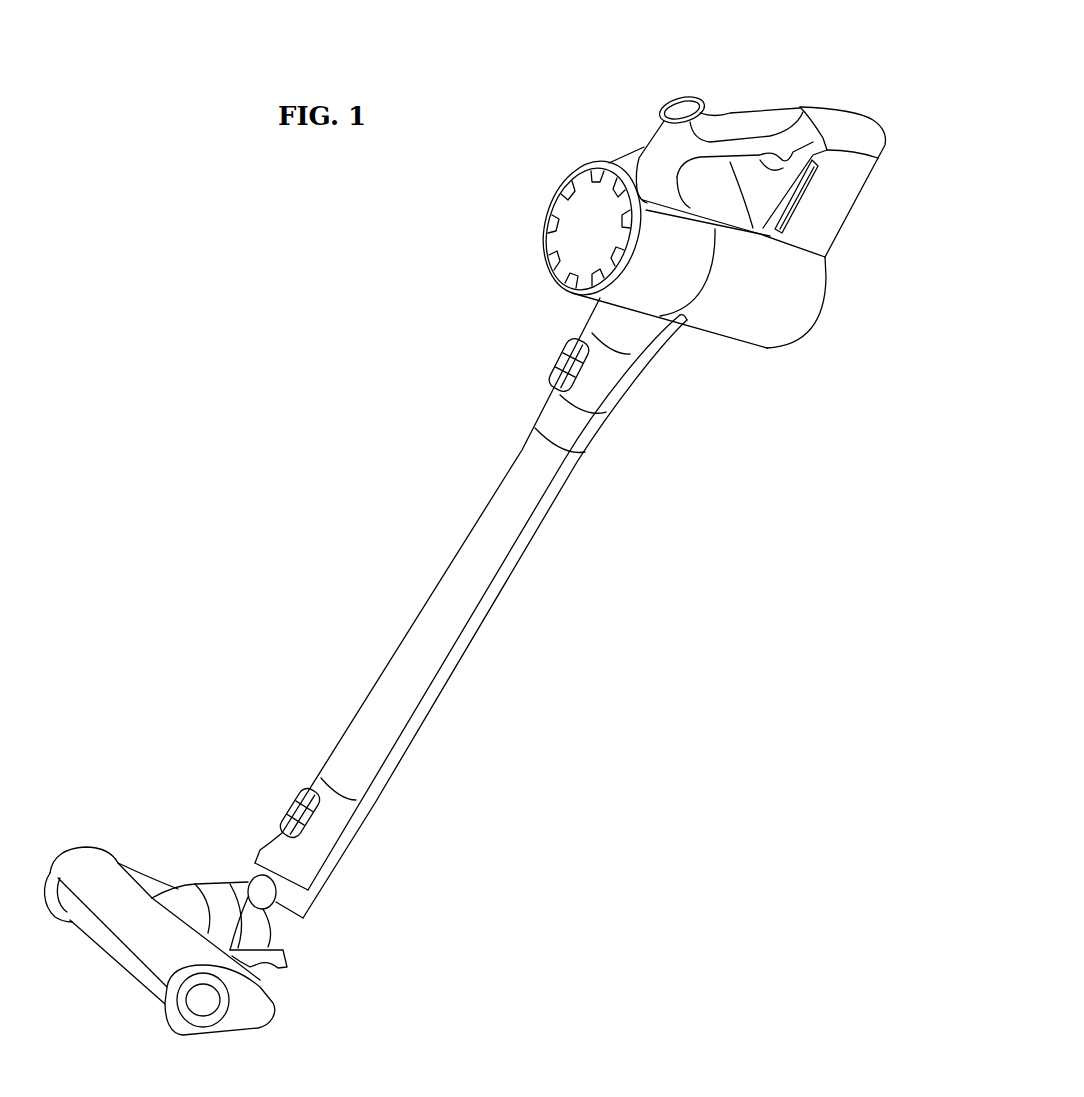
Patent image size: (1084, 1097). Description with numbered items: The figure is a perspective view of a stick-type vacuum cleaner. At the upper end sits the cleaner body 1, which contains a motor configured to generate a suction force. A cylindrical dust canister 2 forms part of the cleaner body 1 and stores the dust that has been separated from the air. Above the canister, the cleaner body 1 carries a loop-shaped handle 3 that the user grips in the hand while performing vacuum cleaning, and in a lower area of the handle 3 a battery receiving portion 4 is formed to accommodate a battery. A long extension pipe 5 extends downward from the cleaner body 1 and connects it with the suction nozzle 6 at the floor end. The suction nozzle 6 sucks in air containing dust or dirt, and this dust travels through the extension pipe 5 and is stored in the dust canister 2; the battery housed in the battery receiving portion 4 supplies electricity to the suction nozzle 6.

The cleaner body 1 is at (647, 278).
The dust canister 2 is at (783, 300).
The handle 3 is at (747, 125).
The battery receiving portion 4 is at (837, 198).
The extension pipe 5 is at (420, 637).
The suction nozzle 6 is at (88, 848).